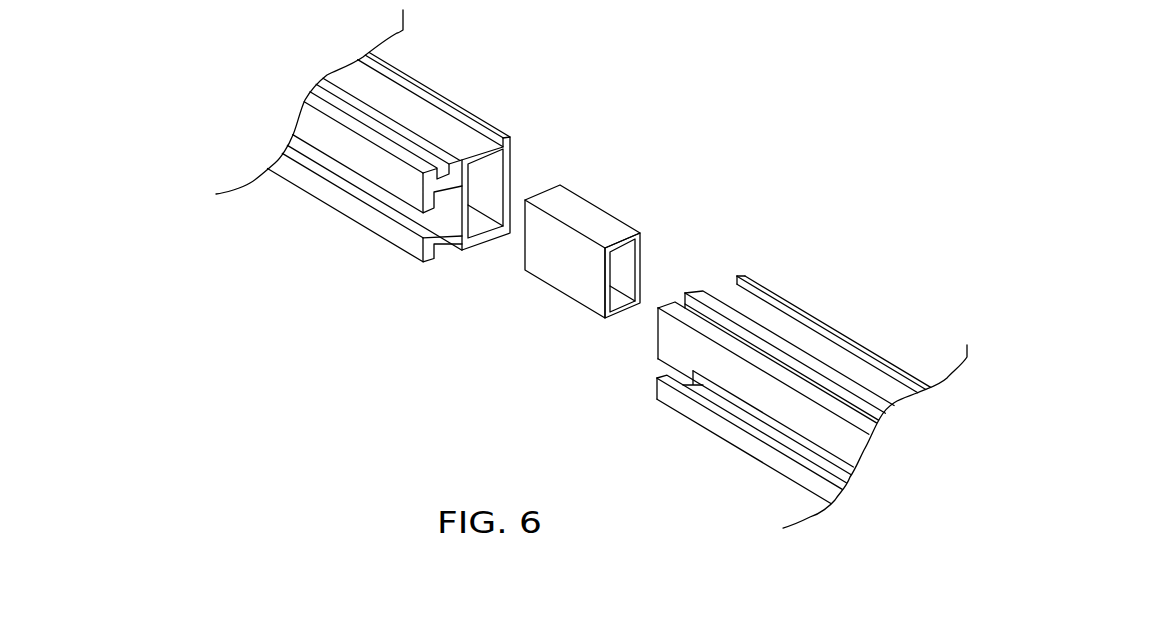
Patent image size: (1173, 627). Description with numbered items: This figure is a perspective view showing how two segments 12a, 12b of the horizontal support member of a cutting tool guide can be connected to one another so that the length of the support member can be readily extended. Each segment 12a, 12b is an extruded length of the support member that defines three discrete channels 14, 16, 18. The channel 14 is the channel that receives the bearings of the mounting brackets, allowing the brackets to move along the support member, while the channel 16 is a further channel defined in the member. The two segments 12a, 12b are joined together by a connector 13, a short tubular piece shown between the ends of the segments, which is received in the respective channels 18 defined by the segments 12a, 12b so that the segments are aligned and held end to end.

The segment of the horizontal support member 12a is at (423, 180).
The segment of the horizontal support member 12b is at (667, 398).
The connector 13 is at (592, 221).
The channel 14 is at (452, 247).
The channel 16 is at (450, 172).
The channel 18 is at (493, 173).